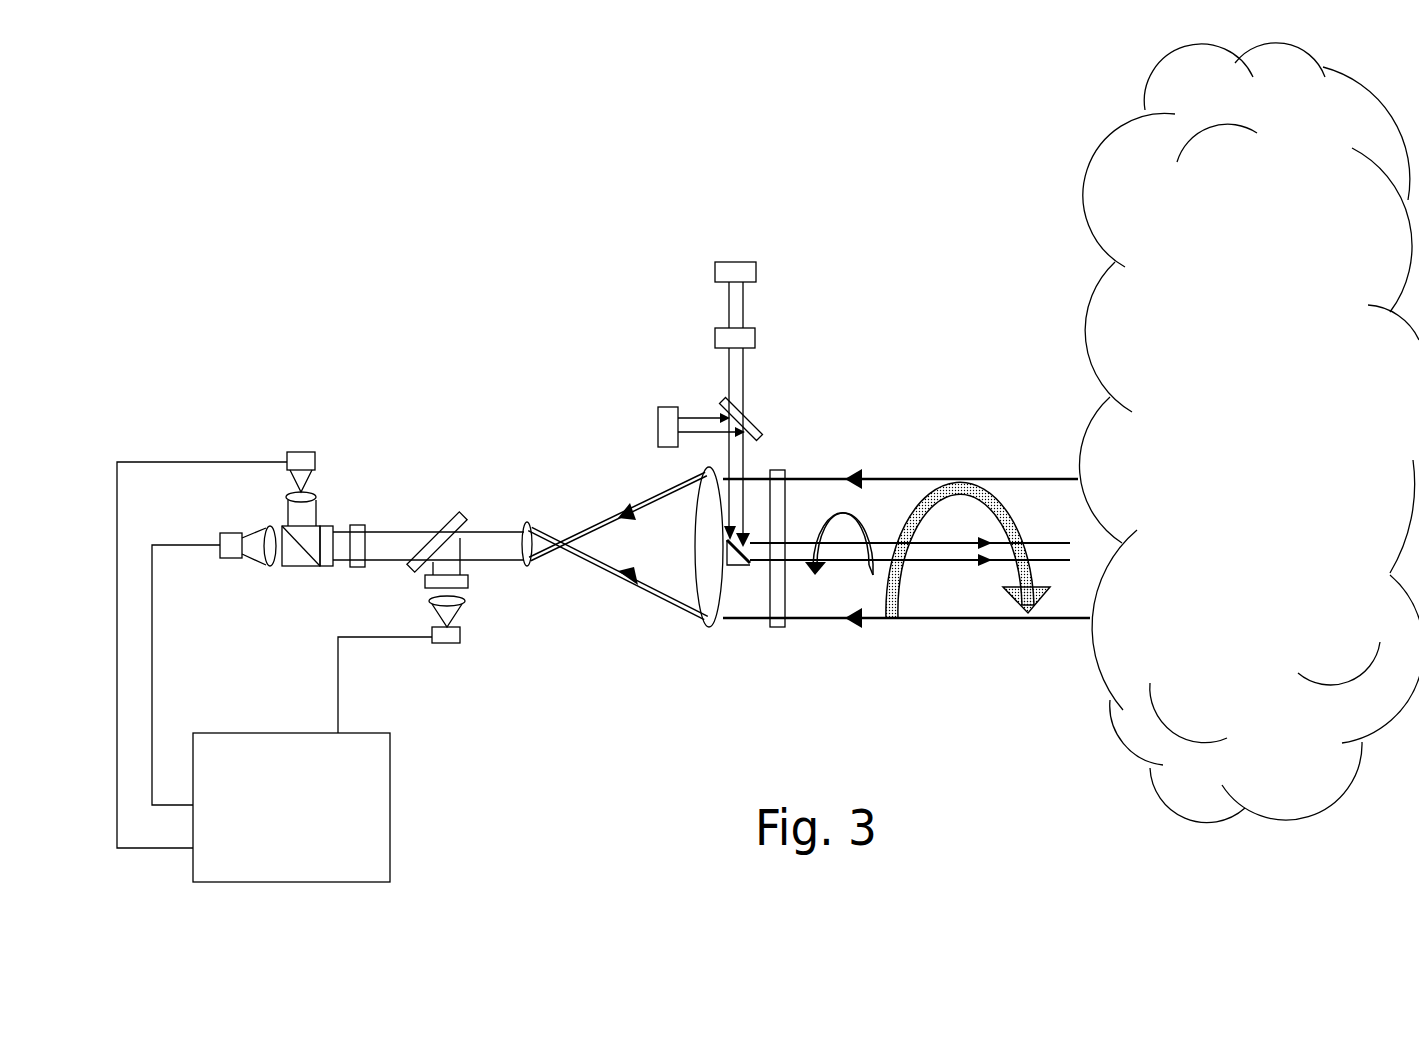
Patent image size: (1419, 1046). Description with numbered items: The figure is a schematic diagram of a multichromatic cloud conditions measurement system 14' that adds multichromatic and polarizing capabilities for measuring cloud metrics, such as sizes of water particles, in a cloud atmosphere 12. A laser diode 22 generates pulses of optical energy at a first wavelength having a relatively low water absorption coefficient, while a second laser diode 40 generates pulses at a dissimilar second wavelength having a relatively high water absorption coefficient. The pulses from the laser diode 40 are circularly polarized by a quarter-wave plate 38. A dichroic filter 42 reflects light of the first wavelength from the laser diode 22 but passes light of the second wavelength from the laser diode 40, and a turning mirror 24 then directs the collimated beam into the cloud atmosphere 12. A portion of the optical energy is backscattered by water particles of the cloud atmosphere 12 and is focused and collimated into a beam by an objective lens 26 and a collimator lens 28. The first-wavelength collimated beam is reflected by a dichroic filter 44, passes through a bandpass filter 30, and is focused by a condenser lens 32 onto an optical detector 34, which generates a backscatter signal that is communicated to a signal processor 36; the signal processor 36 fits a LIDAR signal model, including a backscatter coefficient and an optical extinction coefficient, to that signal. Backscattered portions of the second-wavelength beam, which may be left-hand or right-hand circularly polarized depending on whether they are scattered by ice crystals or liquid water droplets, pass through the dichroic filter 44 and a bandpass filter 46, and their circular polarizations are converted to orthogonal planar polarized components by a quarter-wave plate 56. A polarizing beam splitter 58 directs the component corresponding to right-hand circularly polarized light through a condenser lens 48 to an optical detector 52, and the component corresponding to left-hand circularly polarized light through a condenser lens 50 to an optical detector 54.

The cloud atmosphere 12 is at (1245, 356).
The cloud conditions measurement system 14' is at (354, 209).
The laser diode 22 is at (658, 426).
The turning mirror 24 is at (737, 565).
The objective lens 26 is at (697, 576).
The collimator lens 28 is at (536, 547).
The bandpass filter 30 is at (425, 582).
The condenser lens 32 is at (465, 601).
The optical detector 34 is at (446, 645).
The signal processor 36 is at (276, 859).
The quarter-wave plate 38 is at (715, 338).
The laser diode 40 is at (738, 262).
The dichroic filter 42 is at (757, 418).
The dichroic filter 44 is at (442, 520).
The bandpass filter 46 is at (358, 568).
The condenser lens 48 is at (268, 530).
The condenser lens 50 is at (287, 497).
The optical detector 52 is at (220, 535).
The optical detector 54 is at (301, 452).
The quarter-wave plate 56 is at (328, 526).
The polarizing beam splitter 58 is at (305, 567).